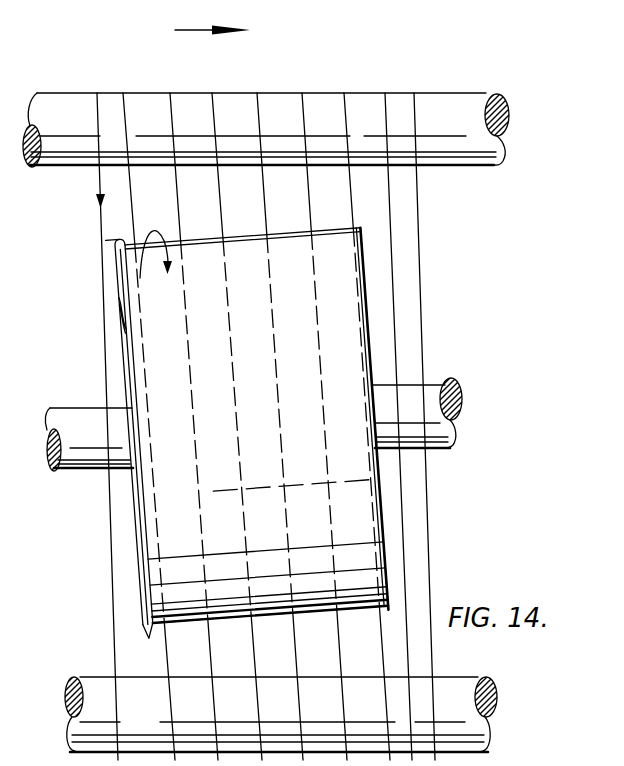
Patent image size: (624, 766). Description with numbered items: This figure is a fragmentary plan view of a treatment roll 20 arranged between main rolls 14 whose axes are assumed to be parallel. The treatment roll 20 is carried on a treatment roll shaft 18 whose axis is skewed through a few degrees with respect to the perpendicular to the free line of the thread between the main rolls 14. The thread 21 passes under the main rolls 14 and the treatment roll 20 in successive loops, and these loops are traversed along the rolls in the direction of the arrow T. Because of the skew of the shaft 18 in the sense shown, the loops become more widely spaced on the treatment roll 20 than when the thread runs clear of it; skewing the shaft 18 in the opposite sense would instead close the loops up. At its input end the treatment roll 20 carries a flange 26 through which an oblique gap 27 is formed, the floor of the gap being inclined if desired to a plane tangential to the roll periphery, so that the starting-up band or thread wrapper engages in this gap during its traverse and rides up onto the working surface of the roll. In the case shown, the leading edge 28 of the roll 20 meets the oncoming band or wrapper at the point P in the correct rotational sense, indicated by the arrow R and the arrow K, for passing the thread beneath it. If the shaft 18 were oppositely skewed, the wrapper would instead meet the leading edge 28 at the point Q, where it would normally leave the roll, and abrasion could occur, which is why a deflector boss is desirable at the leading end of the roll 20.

The main roll 14 is at (293, 762).
The treatment roll shaft 18 is at (72, 416).
The treatment roll 20 is at (363, 257).
The thread 21 is at (100, 282).
The flange 26 is at (133, 393).
The oblique gap 27 is at (118, 313).
The leading edge 28 is at (128, 548).
The direction of traverse arrow T is at (212, 21).
The wire direction arrow K is at (93, 204).
The point of engagement P is at (104, 236).
The rotational sense arrow R is at (172, 270).
The point of departure Q is at (148, 630).